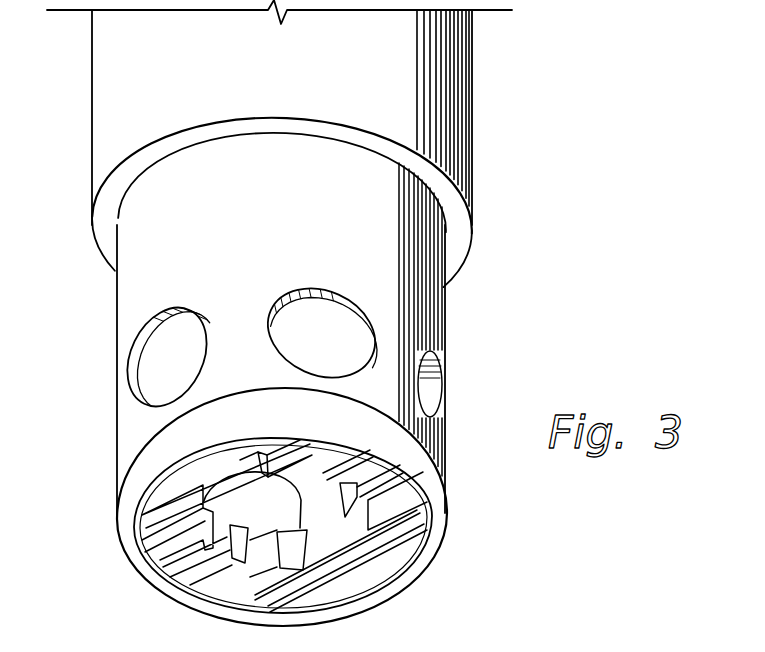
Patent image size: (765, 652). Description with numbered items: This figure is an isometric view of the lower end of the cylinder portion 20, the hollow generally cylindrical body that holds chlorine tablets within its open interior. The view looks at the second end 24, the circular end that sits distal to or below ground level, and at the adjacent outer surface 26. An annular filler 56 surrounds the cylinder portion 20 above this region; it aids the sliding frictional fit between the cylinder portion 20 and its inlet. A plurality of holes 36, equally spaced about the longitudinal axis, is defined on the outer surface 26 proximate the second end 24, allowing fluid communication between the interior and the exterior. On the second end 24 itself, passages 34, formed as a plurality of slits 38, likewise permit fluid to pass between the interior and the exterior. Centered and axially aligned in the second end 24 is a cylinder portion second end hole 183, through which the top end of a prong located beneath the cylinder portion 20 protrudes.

The cylinder portion 20 is at (548, 236).
The annular filler 56 is at (473, 82).
The outer surface 26 is at (447, 298).
The holes 36 is at (170, 308).
The second end 24 is at (435, 549).
The passages 34 is at (172, 553).
The slits 38 is at (283, 600).
The cylinder portion second end hole 183 is at (323, 518).